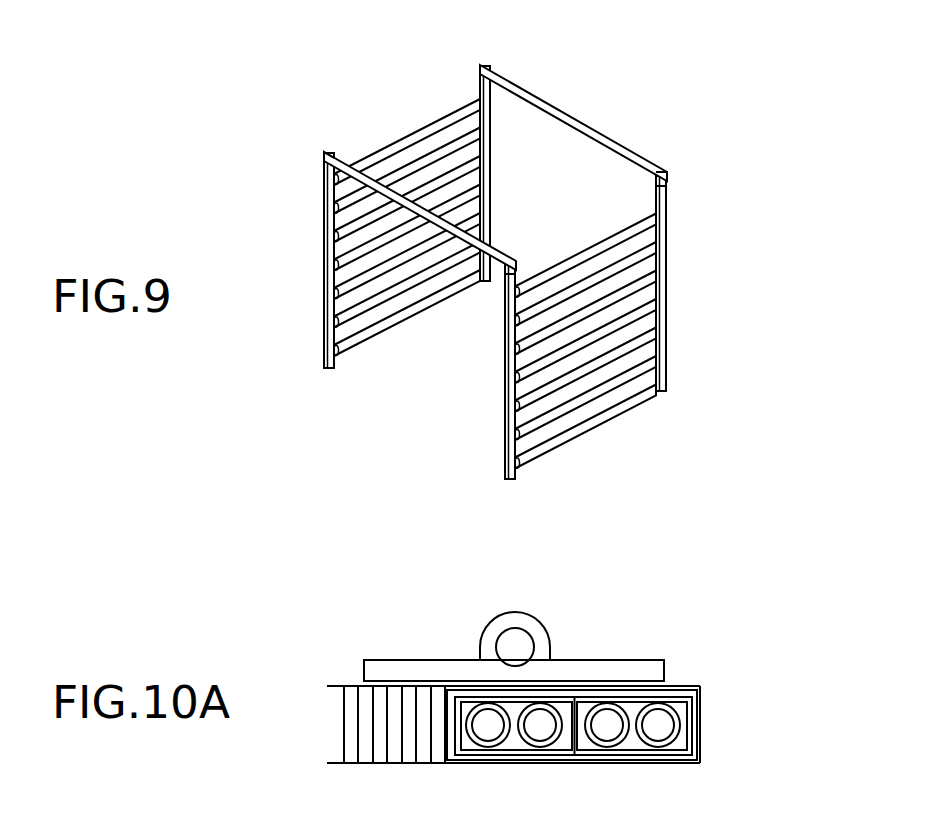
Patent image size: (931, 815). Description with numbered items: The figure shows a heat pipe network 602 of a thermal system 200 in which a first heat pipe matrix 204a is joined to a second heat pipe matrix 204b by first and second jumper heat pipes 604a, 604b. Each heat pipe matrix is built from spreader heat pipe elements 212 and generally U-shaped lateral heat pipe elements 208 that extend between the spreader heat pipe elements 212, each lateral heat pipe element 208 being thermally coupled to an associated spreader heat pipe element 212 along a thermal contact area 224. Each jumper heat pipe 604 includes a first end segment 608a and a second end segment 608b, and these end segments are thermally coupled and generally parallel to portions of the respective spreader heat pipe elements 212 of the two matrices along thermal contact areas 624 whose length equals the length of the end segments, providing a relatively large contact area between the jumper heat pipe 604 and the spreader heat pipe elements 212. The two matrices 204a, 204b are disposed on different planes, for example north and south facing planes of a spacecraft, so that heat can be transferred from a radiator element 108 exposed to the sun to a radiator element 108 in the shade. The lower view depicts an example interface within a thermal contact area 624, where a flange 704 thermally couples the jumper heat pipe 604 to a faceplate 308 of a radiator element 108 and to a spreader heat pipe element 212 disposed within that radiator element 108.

In FIG. 9, the heat pipe network 602 is at (303, 50).
In FIG. 9, the rack 200 is at (299, 279).
In FIG. 9, the first heat pipe matrix 204a is at (666, 325).
In FIG. 9, the second heat pipe matrix 204b is at (324, 318).
In FIG. 9, the lateral heat pipe element 208 is at (407, 322).
In FIG. 10A, the lateral heat pipe element 208 is at (655, 752).
In FIG. 9, the spreader heat pipe element 212 is at (324, 370).
In FIG. 10A, the spreader heat pipe element 212 is at (515, 763).
In FIG. 9, the thermal contact area 224 is at (505, 432).
In FIG. 10A, the thermal contact area 224 is at (574, 704).
In FIG. 9, the first jumper heat pipe 604a is at (371, 172).
In FIG. 9, the second jumper heat pipe 604b is at (568, 110).
In FIG. 10A, the jumper heat pipe 604 is at (524, 616).
In FIG. 9, the first end segment 608a is at (480, 64).
In FIG. 9, the second end segment 608b is at (512, 263).
In FIG. 9, the thermal contact area 624 is at (321, 186).
In FIG. 10A, the thermal contact area 624 is at (672, 686).
In FIG. 10A, the flange 704 is at (437, 660).
In FIG. 10A, the faceplate 308 is at (341, 686).
In FIG. 10A, the radiator element 108 is at (722, 718).